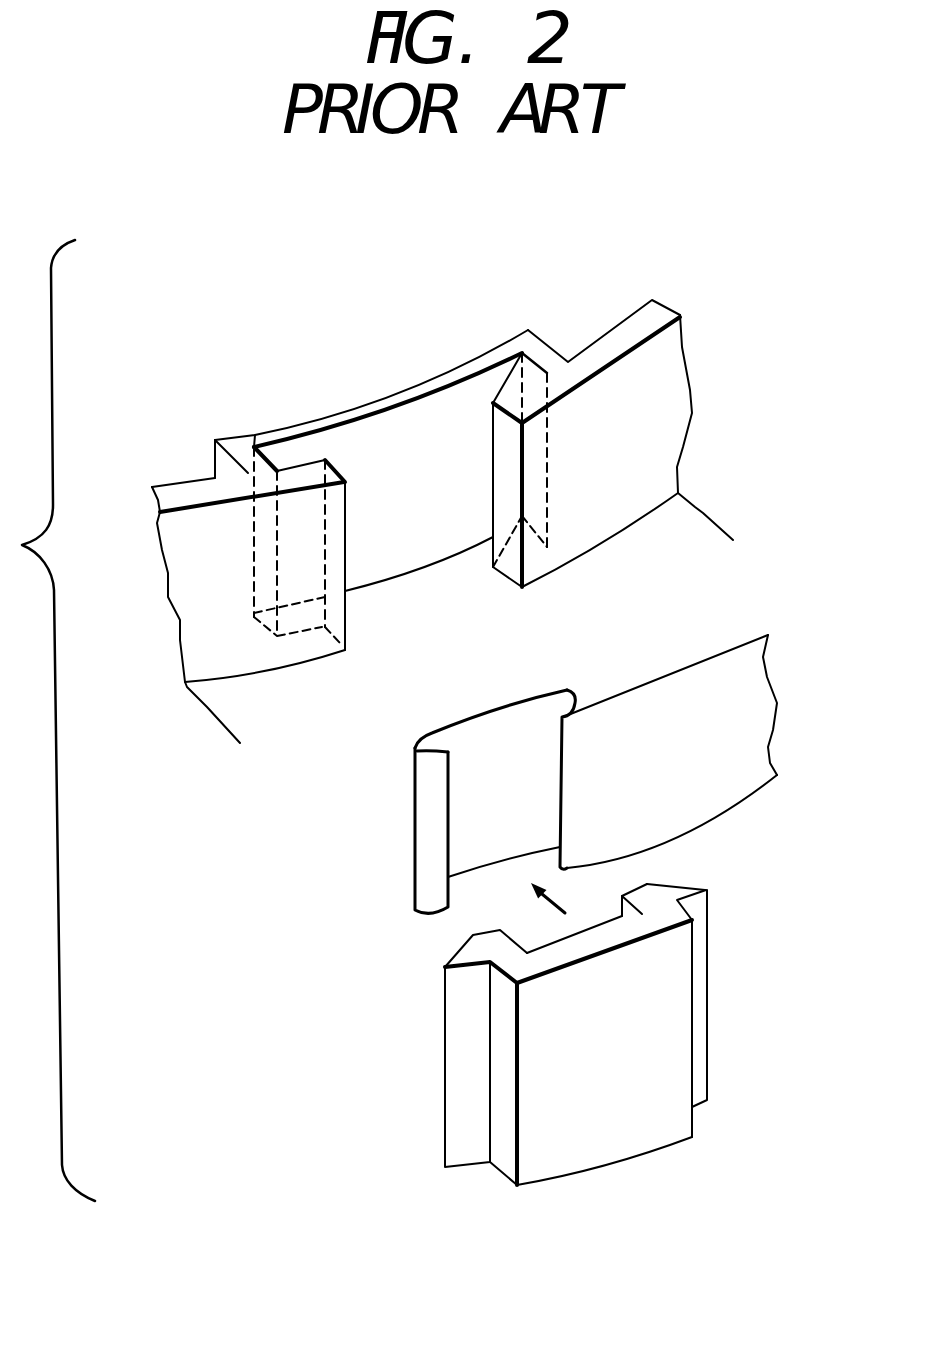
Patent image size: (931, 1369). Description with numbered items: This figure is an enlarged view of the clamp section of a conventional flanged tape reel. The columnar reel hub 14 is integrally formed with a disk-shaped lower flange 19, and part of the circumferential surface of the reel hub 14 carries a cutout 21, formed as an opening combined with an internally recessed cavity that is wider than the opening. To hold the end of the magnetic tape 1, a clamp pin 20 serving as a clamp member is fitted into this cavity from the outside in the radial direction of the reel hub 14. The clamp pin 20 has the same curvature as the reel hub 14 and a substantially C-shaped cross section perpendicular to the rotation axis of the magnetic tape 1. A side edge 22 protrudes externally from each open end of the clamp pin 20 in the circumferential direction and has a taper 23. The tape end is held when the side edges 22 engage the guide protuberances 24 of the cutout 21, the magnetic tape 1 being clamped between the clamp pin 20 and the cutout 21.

The magnetic tape 1 is at (760, 732).
The reel hub 14 is at (633, 423).
The lower flange 19 is at (695, 520).
The clamp pin 20 is at (660, 1070).
The cutout 21 is at (425, 440).
The side edge 22 is at (455, 1047).
The taper 23 is at (448, 951).
The guide protuberance 24 is at (312, 467).